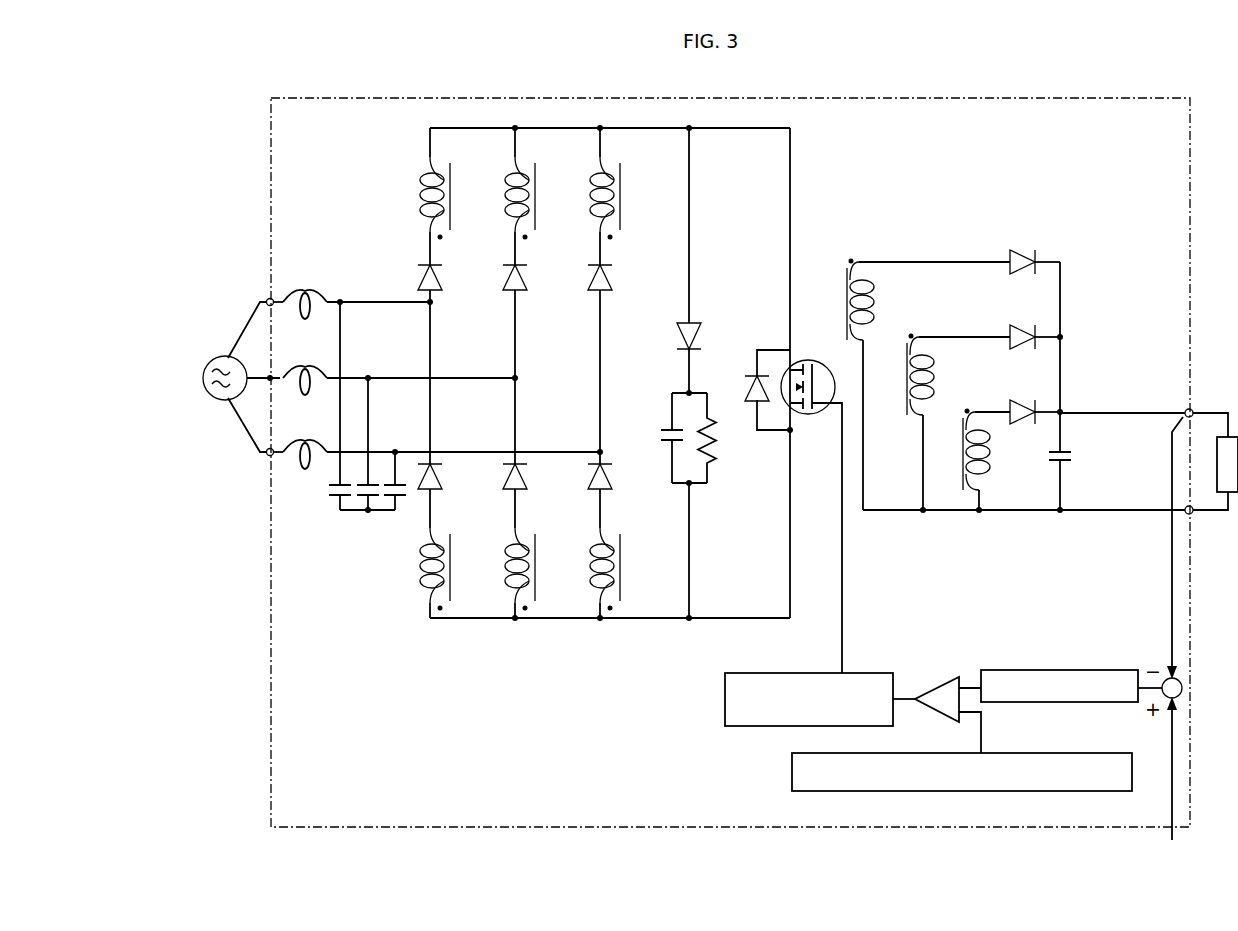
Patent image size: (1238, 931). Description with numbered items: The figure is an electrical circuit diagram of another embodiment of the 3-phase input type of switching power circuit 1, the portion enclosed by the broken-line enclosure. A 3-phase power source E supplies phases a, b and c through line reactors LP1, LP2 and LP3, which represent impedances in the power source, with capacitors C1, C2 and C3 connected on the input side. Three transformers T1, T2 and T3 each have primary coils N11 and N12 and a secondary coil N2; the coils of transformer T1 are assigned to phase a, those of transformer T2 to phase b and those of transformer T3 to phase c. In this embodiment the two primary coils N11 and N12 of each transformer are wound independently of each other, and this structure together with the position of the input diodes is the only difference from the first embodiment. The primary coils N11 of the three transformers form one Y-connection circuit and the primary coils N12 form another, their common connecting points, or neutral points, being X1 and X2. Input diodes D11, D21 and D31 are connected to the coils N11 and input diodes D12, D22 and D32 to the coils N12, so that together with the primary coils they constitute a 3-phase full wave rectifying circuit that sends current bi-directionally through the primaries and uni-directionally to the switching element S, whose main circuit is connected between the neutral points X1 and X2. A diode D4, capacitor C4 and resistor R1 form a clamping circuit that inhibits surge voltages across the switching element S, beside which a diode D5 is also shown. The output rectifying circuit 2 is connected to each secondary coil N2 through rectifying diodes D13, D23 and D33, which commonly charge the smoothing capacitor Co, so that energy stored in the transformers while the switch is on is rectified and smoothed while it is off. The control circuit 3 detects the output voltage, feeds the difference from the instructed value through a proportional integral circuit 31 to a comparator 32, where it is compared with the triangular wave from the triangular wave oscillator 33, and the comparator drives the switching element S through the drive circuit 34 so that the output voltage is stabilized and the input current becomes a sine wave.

The 3-phase input type of switching power circuit 1 is at (621, 98).
The output rectifying circuit 2 is at (941, 226).
The control circuit 3 is at (1027, 606).
The proportional integral circuit 31 is at (986, 670).
The comparator 32 is at (941, 685).
The triangular wave oscillator 33 is at (792, 778).
The drive circuit 34 is at (725, 713).
The common connecting point X1 is at (473, 128).
The common connecting point X2 is at (508, 620).
The transformer T1 is at (479, 197).
The transformer T2 is at (564, 197).
The transformer T3 is at (649, 197).
The primary coil N11 is at (421, 213).
The primary coil N12 is at (421, 583).
The secondary coil N2 is at (871, 295).
The input diode D11 is at (438, 290).
The input diode D21 is at (523, 290).
The input diode D31 is at (608, 290).
The input diode D12 is at (438, 489).
The input diode D22 is at (523, 489).
The input diode D32 is at (608, 489).
The diode D4 is at (677, 341).
The diode D5 is at (750, 380).
The capacitor C4 is at (662, 434).
The resistor R1 is at (717, 447).
The switching element S is at (823, 361).
The line reactor LP1 is at (304, 294).
The line reactor LP2 is at (304, 370).
The line reactor LP3 is at (304, 445).
The capacitor C1 is at (332, 488).
The capacitor C2 is at (360, 495).
The capacitor C3 is at (398, 495).
The rectifying diode D13 is at (1026, 262).
The rectifying diode D23 is at (1026, 337).
The rectifying diode D33 is at (1026, 412).
The smoothing capacitor Co is at (1052, 462).
The 3-phase power source E is at (221, 400).
The phase a is at (265, 290).
The phase b is at (260, 364).
The phase c is at (266, 466).